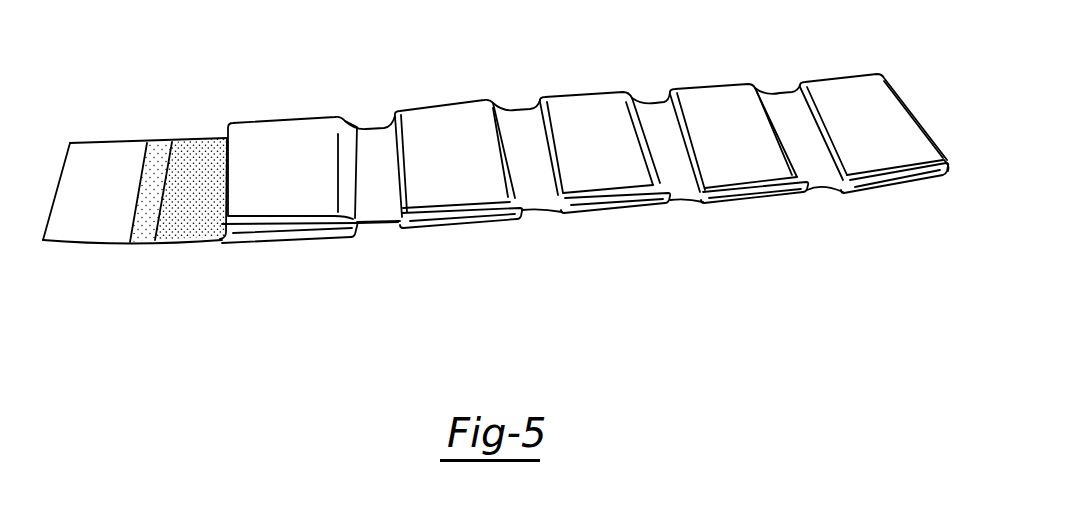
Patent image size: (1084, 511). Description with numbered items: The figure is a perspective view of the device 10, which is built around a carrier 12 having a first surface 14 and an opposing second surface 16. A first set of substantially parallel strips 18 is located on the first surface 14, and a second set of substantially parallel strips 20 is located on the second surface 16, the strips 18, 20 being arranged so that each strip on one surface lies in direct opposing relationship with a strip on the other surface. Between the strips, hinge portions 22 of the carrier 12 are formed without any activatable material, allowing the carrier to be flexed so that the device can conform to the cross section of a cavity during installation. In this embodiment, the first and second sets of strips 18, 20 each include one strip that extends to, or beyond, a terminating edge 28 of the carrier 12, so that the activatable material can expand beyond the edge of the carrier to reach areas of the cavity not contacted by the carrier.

The device 10 is at (209, 49).
The carrier 12 is at (153, 163).
The first surface 14 is at (202, 160).
The second surface 16 is at (375, 230).
The first set of substantially parallel strips 18 is at (292, 178).
The second set of substantially parallel strips 20 is at (261, 242).
The hinge portions 22 is at (387, 181).
The terminating edge 28 is at (948, 165).